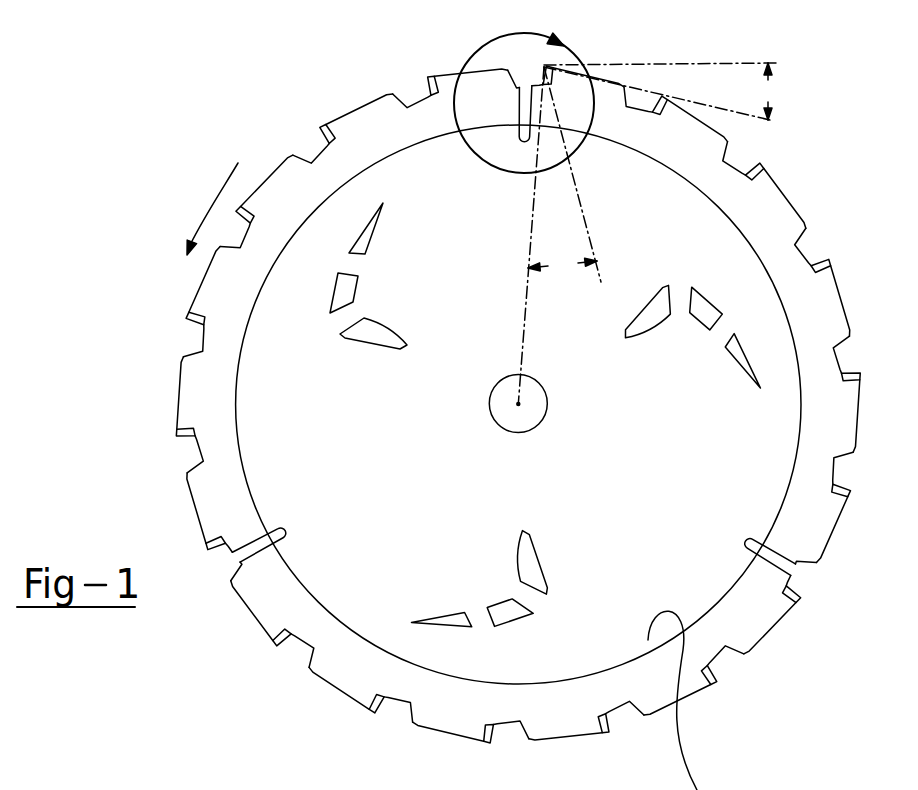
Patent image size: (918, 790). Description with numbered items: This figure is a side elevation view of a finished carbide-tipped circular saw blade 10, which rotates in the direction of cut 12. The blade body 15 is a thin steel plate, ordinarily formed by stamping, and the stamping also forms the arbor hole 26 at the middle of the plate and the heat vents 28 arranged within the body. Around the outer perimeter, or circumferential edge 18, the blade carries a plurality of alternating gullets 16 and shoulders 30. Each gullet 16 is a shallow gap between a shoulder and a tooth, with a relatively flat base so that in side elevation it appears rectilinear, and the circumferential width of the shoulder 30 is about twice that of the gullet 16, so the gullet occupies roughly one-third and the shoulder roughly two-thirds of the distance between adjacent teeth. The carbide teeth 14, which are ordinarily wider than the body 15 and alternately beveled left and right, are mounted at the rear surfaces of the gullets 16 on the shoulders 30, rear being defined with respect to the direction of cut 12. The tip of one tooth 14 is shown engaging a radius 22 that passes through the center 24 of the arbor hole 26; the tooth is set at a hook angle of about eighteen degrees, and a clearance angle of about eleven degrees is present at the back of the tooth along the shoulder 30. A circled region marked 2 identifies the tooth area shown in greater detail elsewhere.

The circular saw blade 10 is at (210, 114).
The direction of cut 12 is at (212, 194).
The carbide teeth 14 is at (304, 120).
The saw blade body 15 is at (713, 577).
The gullet 16 is at (737, 158).
The circumferential edge 18 is at (827, 542).
The detail view indicator 2 is at (524, 98).
The radius 22 is at (523, 338).
The center 24 is at (518, 404).
The arbor hole 26 is at (542, 396).
The heat vents 28 is at (689, 352).
The shoulder 30 is at (783, 210).